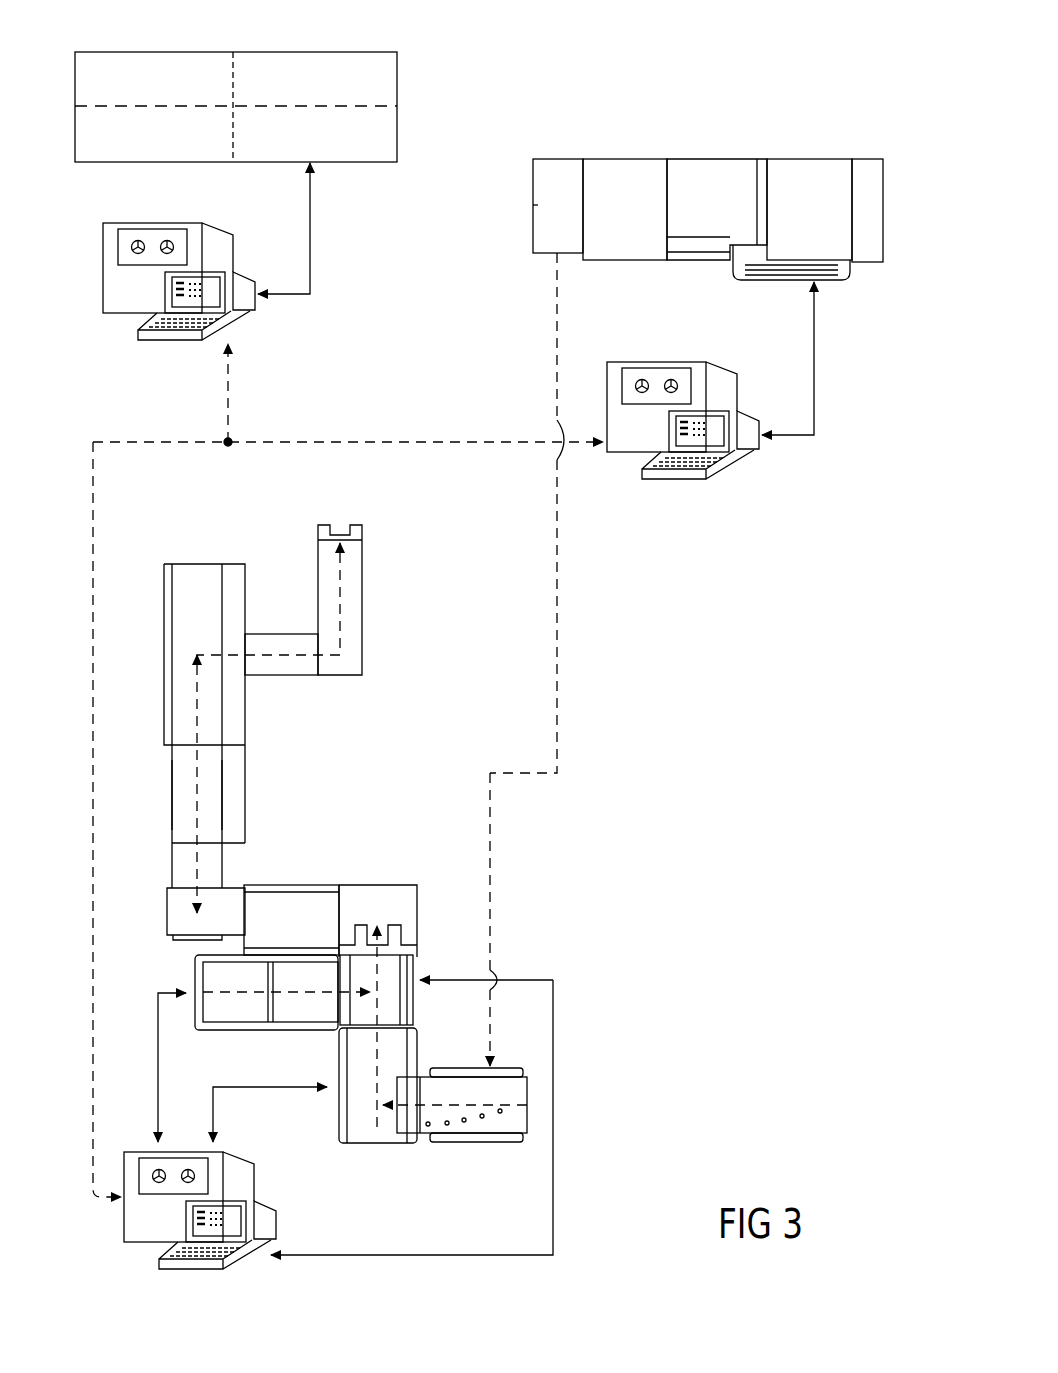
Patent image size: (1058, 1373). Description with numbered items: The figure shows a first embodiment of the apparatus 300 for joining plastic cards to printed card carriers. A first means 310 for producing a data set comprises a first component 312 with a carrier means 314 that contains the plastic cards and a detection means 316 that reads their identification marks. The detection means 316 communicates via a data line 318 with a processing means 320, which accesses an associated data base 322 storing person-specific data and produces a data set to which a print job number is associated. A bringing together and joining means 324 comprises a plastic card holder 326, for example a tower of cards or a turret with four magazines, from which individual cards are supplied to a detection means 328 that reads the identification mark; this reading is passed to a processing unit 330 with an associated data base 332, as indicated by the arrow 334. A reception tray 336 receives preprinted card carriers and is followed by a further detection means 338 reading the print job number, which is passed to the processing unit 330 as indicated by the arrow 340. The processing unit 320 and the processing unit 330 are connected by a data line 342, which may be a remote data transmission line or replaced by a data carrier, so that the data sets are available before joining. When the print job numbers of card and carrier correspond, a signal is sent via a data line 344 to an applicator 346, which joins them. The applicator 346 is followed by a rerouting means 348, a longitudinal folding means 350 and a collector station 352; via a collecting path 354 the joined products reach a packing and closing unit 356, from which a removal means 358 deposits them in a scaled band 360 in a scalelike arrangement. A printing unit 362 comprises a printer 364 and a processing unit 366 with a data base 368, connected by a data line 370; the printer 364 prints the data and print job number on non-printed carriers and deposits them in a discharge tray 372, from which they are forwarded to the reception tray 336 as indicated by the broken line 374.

The apparatus 300 is at (768, 807).
The first means for producing a data set 310 is at (90, 333).
The first component 312 is at (269, 110).
The carrier means 314 is at (165, 68).
The detection means 316 is at (360, 145).
The data line 318 is at (312, 250).
The processing means 320 is at (171, 289).
The data base 322 is at (103, 265).
The bringing together and joining means 324 is at (478, 750).
The plastic card holder 326 is at (240, 1005).
The detection means 328 is at (302, 1005).
The processing unit 330 is at (199, 1210).
The data base 332 is at (124, 1222).
The arrow 334 is at (158, 1028).
The reception tray 336 is at (478, 1128).
The further detection means 338 is at (374, 1128).
The arrow 340 is at (268, 1088).
The data line 342 is at (93, 718).
The data line 344 is at (470, 975).
The applicator 346 is at (415, 1003).
The rerouting means 348 is at (365, 910).
The longitudinal folding means 350 is at (285, 908).
The collector station 352 is at (190, 925).
The collecting path 354 is at (213, 767).
The packing and closing unit 356 is at (252, 694).
The removal means 358 is at (280, 675).
The scaled band 360 is at (352, 566).
The printing unit 362 is at (515, 383).
The printer 364 is at (708, 192).
The processing unit 366 is at (708, 402).
The data base 368 is at (627, 362).
The data line 370 is at (814, 392).
The discharge tray 372 is at (554, 159).
The broken line 374 is at (560, 633).